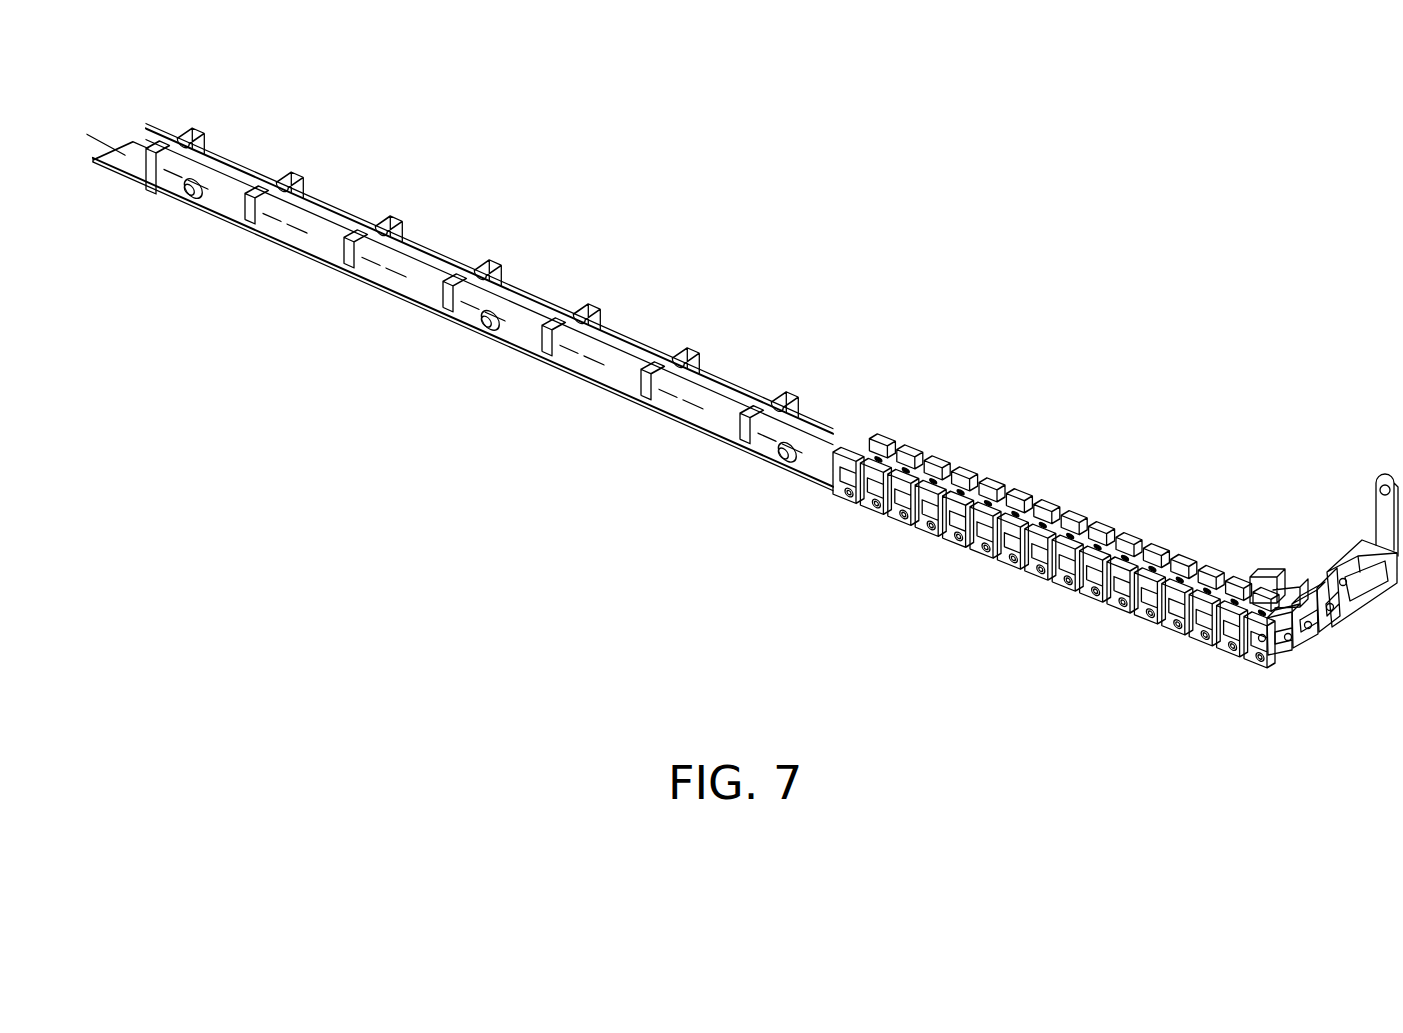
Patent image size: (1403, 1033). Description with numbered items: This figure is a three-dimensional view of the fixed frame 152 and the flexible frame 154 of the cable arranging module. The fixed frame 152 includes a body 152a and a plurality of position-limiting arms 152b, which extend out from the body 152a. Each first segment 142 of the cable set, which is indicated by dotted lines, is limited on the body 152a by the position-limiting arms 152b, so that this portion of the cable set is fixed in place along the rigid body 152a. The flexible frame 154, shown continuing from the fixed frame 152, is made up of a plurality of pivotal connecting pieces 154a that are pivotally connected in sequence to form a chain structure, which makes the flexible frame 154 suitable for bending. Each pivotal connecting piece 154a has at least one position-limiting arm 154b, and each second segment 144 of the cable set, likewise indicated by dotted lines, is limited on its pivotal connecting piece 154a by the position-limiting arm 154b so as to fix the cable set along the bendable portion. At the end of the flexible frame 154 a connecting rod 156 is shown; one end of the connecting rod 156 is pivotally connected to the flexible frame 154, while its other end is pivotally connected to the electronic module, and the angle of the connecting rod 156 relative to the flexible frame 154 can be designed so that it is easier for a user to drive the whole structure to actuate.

The first segment 142 is at (626, 367).
The second segment 144 is at (1305, 588).
The fixed frame 152 is at (378, 343).
The body 152a is at (675, 413).
The position-limiting arm 152b is at (783, 388).
The flexible frame 154 is at (1118, 655).
The pivotal connecting piece 154a is at (918, 520).
The position-limiting arm 154b is at (1023, 492).
The connecting rod 156 is at (1373, 507).